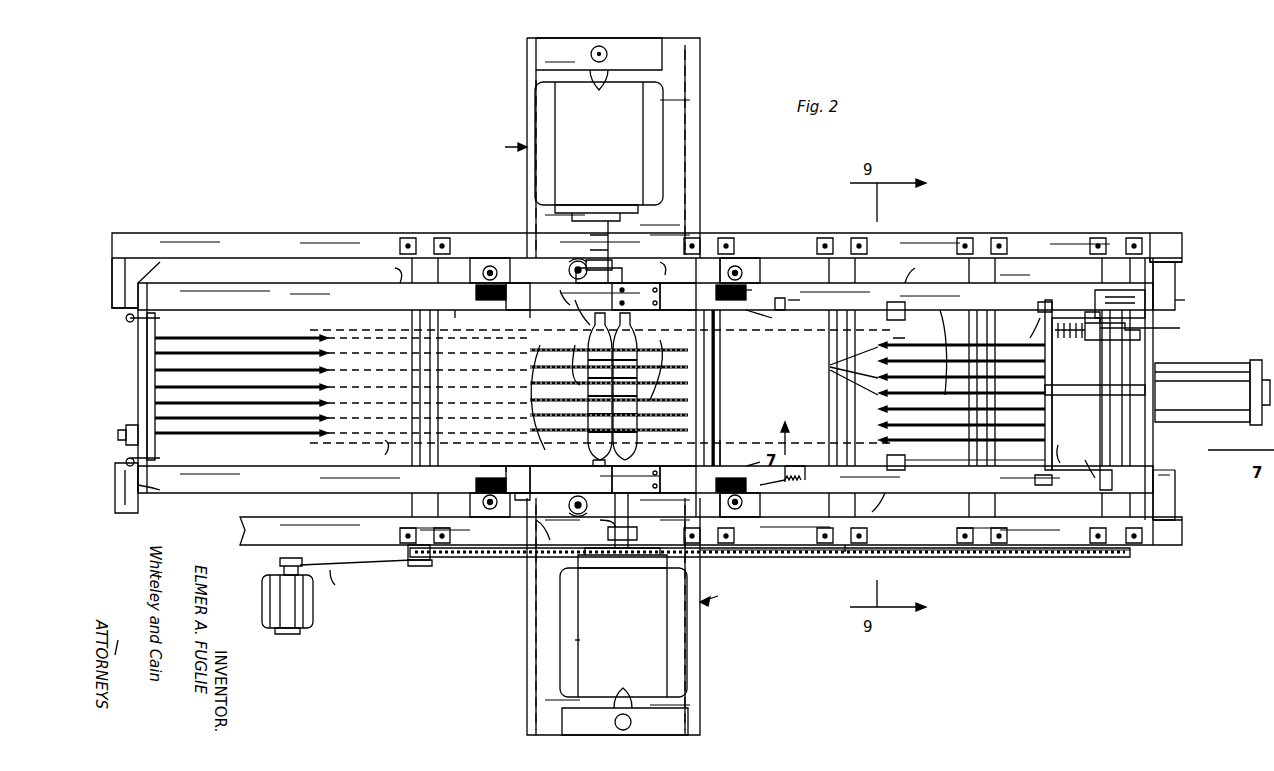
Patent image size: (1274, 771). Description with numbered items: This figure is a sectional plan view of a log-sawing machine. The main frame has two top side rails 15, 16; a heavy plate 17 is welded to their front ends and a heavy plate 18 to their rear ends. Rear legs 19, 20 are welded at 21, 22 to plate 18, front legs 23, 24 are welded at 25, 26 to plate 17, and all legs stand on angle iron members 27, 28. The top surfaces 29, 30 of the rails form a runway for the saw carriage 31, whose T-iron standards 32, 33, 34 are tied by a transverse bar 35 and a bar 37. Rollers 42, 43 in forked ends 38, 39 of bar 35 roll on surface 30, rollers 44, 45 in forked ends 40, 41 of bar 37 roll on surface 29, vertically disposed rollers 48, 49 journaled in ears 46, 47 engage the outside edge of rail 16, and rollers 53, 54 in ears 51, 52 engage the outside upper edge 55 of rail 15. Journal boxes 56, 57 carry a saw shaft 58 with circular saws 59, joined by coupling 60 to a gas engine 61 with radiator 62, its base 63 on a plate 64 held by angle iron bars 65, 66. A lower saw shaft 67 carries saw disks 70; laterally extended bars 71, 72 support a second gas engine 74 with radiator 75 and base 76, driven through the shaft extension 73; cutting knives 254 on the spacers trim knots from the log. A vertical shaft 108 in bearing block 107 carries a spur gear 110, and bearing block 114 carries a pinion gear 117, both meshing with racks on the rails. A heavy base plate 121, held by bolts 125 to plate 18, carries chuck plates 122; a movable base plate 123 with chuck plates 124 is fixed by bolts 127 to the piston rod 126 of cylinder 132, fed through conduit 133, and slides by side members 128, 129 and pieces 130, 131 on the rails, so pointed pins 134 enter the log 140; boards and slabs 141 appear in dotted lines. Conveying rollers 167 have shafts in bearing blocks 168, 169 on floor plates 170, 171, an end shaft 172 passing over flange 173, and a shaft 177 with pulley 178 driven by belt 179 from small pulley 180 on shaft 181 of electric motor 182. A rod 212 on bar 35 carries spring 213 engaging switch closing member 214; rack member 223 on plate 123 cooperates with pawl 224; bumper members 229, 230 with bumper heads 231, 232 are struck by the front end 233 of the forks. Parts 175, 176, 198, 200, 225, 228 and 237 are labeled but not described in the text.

The top side rail 15 is at (915, 273).
The top side rail 16 is at (884, 504).
The heavy plate 17 is at (1150, 345).
The heavy plate 18 is at (136, 345).
The rear leg 19 is at (118, 304).
The rear leg 20 is at (122, 513).
The weld 21 is at (157, 270).
The weld 22 is at (157, 496).
The front leg 23 is at (1176, 285).
The front leg 24 is at (1176, 508).
The weld 25 is at (1191, 299).
The weld 26 is at (1176, 482).
The angle iron member 27 is at (1050, 246).
The angle iron member 28 is at (358, 545).
The top surface 29 is at (240, 305).
The top surface 30 is at (320, 480).
The saw carriage 31 is at (610, 371).
The vertical T-iron standard 32 is at (690, 298).
The vertical T-iron standard 33 is at (513, 504).
The vertical T-iron standard 34 is at (690, 485).
The transverse bar 35 is at (520, 462).
The bar 37 is at (519, 320).
The forked end 38 is at (492, 460).
The forked end 39 is at (745, 438).
The forked end 40 is at (465, 320).
The forked end 41 is at (722, 312).
The roller 42 is at (475, 482).
The roller 43 is at (746, 484).
The roller 44 is at (475, 293).
The roller 45 is at (746, 292).
The ears 46 is at (482, 502).
The ears 47 is at (742, 502).
The vertically disposed roller 48 is at (480, 520).
The vertically disposed roller 49 is at (735, 520).
The ears 51 is at (742, 272).
The ears 52 is at (485, 255).
The roller 53 is at (735, 255).
The roller 54 is at (482, 272).
The outside upper edge 55 is at (387, 272).
The journal box 56 is at (638, 485).
The journal box 57 is at (636, 295).
The saw shaft 58 is at (630, 318).
The circular saws 59 is at (690, 370).
The coupling 60 is at (635, 550).
The gas engine 61 is at (660, 668).
The radiator 62 is at (655, 735).
The base 63 is at (575, 650).
The plate 64 is at (698, 640).
The angle iron bar 65 is at (551, 540).
The angle iron bar 66 is at (692, 512).
The saw shaft 67 is at (592, 458).
The circular saw disks 70 is at (527, 390).
The laterally extended bar 71 is at (563, 269).
The laterally extended bar 72 is at (659, 252).
The extension 73 is at (625, 240).
The gas engine 74 is at (640, 160).
The radiator 75 is at (640, 45).
The base 76 is at (700, 170).
The bearing block 107 is at (585, 262).
The vertical shaft 108 is at (567, 317).
The spur gear 110 is at (550, 297).
The bearing block 114 is at (598, 522).
The pinion gear 117 is at (559, 506).
The heavy base plate 121 is at (158, 450).
The chuck plates 122 is at (285, 400).
The base plate 123 is at (1053, 360).
The chuck plates 124 is at (962, 368).
The bolts 125 is at (180, 478).
The piston rod 126 is at (1090, 400).
The bolts 127 is at (1052, 380).
The side member 128 is at (1035, 300).
The side member 129 is at (940, 470).
The piece 130 is at (900, 290).
The piece 131 is at (900, 472).
The hydraulic or pneumatic cylinder 132 is at (1188, 348).
The conduit 133 is at (1258, 345).
The pointed pins 134 is at (330, 337).
The log 140 is at (643, 393).
The boards and slabs 141 is at (390, 375).
The rollers 167 is at (1016, 273).
The bearing block 168 is at (992, 218).
The bearing block 169 is at (972, 565).
The floor plate 170 is at (1183, 247).
The floor plate 171 is at (1170, 547).
The end shaft 172 is at (840, 557).
The upright flange 173 is at (948, 535).
The rack bar 175 is at (460, 560).
The rack mount 176 is at (905, 557).
The shaft 177 is at (405, 562).
The pulley 178 is at (425, 570).
The belt 179 is at (345, 580).
The small pulley 180 is at (280, 556).
The shaft 181 is at (325, 560).
The electric motor 182 is at (295, 612).
The switch 198 is at (118, 435).
The switch bracket 200 is at (130, 423).
The rod 212 is at (778, 487).
The spring 213 is at (800, 475).
The switch closing member 214 is at (1087, 468).
The rack member 223 is at (1090, 300).
The pawl 224 is at (1149, 322).
The housing 225 is at (1100, 288).
The stop block 228 is at (812, 297).
The bumper member 229 is at (1073, 444).
The bumper member 230 is at (1056, 340).
The bumper head 231 is at (1020, 331).
The bumper head 232 is at (1033, 480).
The front end 233 is at (769, 388).
The stop 237 is at (790, 290).
The cutting knives 254 is at (614, 365).